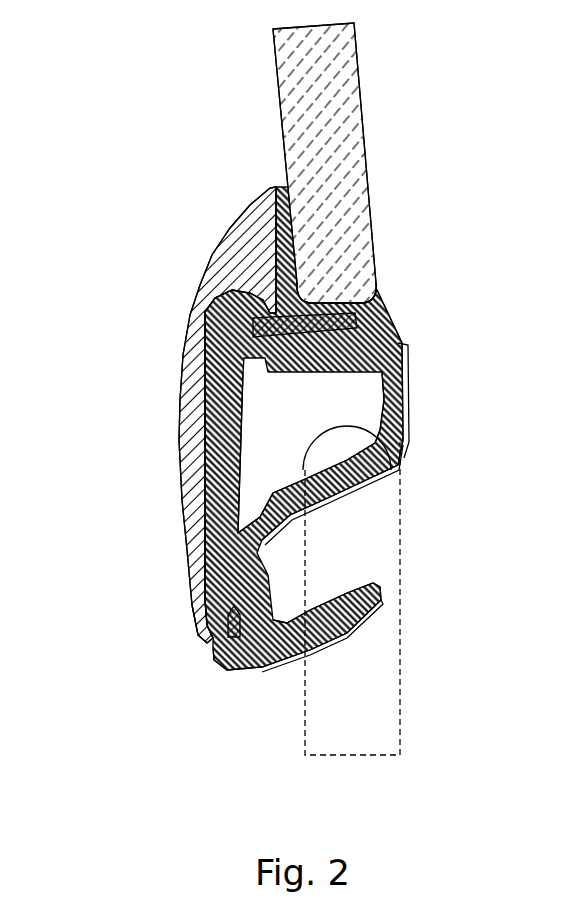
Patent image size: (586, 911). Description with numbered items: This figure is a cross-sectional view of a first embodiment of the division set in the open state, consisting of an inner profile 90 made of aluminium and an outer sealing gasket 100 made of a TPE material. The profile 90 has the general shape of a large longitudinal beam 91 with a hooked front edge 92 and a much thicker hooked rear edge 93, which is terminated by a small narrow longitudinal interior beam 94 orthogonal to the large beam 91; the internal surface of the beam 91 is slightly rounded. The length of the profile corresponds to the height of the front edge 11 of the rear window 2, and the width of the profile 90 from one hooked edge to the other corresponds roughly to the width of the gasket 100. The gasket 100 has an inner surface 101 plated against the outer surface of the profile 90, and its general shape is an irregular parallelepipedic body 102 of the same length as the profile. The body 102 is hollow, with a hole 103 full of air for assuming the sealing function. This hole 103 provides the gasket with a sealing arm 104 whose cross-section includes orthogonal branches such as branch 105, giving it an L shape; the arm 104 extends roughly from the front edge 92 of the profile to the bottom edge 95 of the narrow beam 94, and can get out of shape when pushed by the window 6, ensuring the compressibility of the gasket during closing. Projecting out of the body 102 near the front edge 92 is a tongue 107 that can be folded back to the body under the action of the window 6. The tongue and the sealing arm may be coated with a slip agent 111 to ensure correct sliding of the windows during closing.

The rear window 2 is at (347, 50).
The window 6 is at (327, 739).
The front edge of the rear window 11 is at (345, 270).
The inner profile 90 is at (113, 458).
The large longitudinal beam 91 is at (192, 378).
The hooked front edge 92 is at (200, 628).
The hooked rear edge 93 is at (248, 230).
The narrow longitudinal interior beam 94 is at (210, 308).
The bottom edge of the narrow beam 95 is at (383, 323).
The outer sealing gasket 100 is at (436, 417).
The inner surface of the gasket 101 is at (207, 562).
The irregular parallelepipedic body 102 is at (408, 378).
The hole 103 is at (323, 422).
The sealing arm 104 is at (383, 468).
The branch of the sealing arm 105 is at (320, 490).
The tongue 107 is at (355, 637).
The slip agent 111 is at (408, 440).